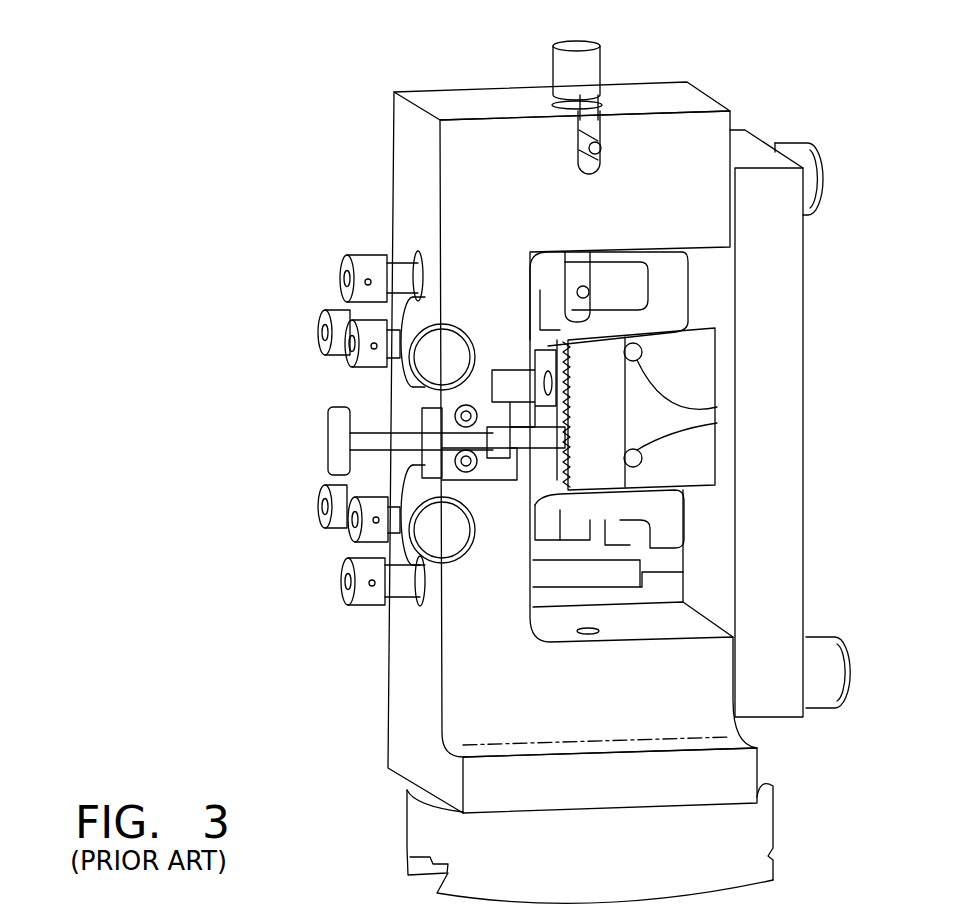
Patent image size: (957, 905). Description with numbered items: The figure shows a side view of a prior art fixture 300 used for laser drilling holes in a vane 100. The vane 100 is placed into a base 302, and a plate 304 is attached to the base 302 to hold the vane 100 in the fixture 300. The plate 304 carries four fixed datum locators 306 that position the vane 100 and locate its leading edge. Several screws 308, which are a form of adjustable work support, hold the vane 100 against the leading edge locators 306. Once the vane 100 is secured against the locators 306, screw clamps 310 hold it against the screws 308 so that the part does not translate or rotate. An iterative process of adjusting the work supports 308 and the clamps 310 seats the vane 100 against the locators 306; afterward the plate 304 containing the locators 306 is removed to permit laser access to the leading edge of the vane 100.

The fixture 300 is at (569, 470).
The base 302 is at (455, 155).
The plate 304 is at (760, 278).
The fixed datum locators 306 is at (641, 455).
The screws 308 is at (325, 328).
The screw clamps 310 is at (601, 64).
The vane 100 is at (620, 419).